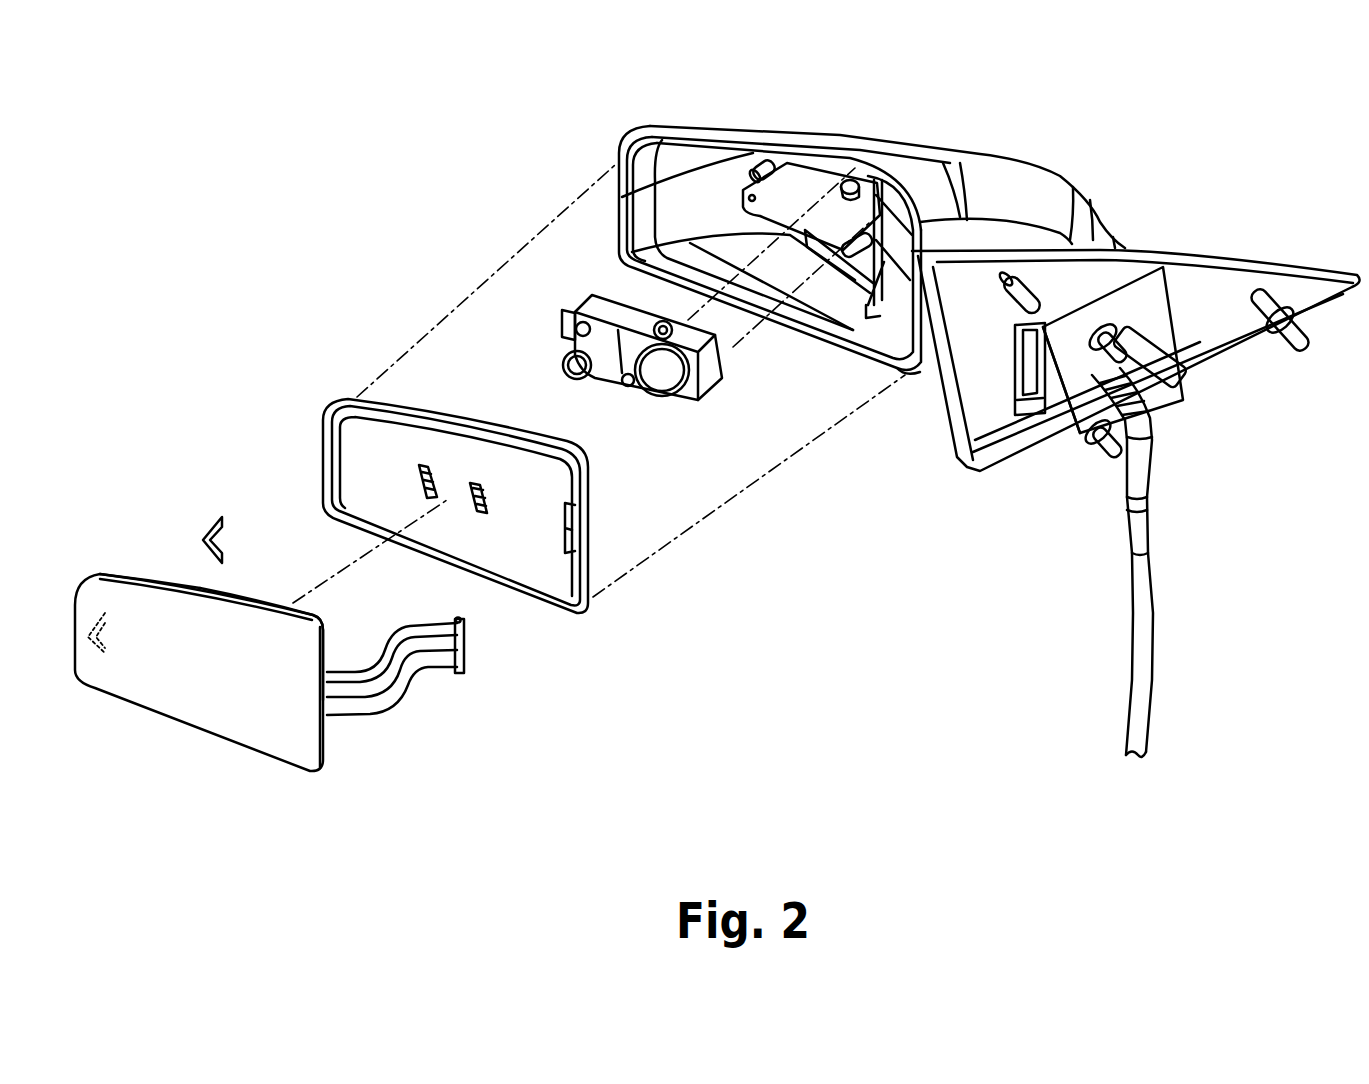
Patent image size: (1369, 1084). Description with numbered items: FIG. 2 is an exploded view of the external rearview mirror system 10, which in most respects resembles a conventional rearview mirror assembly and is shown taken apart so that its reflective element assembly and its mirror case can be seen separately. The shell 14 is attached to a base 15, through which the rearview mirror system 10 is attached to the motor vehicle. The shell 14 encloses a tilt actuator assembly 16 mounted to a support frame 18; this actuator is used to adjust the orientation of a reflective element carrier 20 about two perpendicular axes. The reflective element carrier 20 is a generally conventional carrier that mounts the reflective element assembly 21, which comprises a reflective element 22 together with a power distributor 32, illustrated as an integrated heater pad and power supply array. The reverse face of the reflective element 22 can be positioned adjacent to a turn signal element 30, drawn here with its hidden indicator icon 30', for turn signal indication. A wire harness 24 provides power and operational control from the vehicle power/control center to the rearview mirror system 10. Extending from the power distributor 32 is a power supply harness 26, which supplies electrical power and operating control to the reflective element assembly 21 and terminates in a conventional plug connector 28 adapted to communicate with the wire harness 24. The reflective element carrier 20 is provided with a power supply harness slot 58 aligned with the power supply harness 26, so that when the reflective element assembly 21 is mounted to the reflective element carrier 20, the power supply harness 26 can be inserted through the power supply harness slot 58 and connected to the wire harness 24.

The external rearview mirror system 10 is at (346, 237).
The shell 14 is at (990, 173).
The base 15 is at (1245, 262).
The tilt actuator assembly 16 is at (710, 378).
The support frame 18 is at (800, 180).
The reflective element carrier 20 is at (355, 463).
The reflective element assembly 21 is at (99, 573).
The reflective element 22 is at (165, 617).
The wire harness 24 is at (1143, 582).
The power supply harness 26 is at (398, 658).
The plug connector 28 is at (464, 658).
The turn signal element 30 is at (195, 502).
The hidden indicator icon 30' is at (112, 687).
The power distributor 32 is at (262, 603).
The power supply harness slot 58 is at (570, 518).